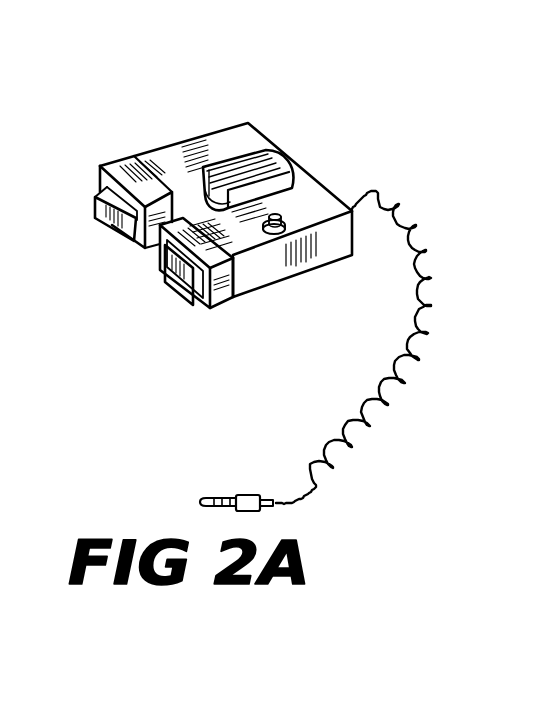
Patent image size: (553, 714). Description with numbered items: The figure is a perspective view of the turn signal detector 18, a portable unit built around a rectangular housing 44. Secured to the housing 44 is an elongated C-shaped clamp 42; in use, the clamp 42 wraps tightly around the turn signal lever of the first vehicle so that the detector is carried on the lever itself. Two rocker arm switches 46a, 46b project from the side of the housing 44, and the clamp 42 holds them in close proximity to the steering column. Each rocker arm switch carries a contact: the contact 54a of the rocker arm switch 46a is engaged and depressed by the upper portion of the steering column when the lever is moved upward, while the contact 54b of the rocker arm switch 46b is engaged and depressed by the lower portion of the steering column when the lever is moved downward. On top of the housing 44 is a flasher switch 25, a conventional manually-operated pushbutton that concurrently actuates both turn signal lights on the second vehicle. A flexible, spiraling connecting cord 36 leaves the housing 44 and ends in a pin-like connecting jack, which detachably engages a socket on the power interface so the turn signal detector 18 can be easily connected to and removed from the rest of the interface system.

The turn signal detector 18 is at (300, 123).
The rectangular housing 44 is at (263, 272).
The elongated C-shaped clamp 42 is at (296, 162).
The flasher switch 25 is at (289, 224).
The rocker arm switch 46a is at (222, 300).
The rocker arm switch 46b is at (115, 172).
The contact 54a is at (174, 290).
The contact 54b is at (93, 212).
The connecting cord 36 is at (430, 239).